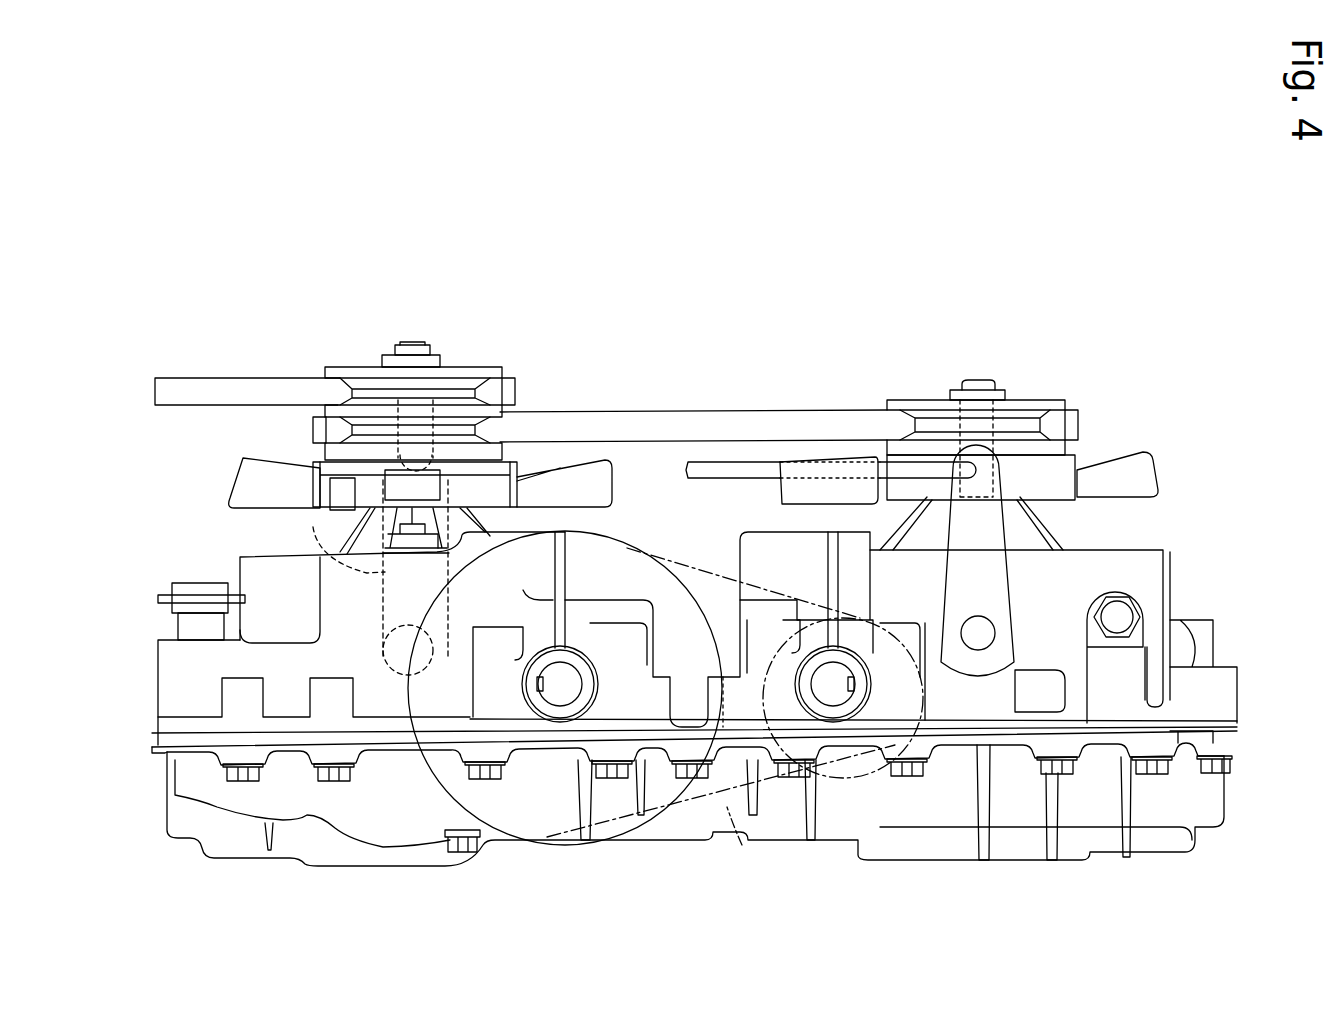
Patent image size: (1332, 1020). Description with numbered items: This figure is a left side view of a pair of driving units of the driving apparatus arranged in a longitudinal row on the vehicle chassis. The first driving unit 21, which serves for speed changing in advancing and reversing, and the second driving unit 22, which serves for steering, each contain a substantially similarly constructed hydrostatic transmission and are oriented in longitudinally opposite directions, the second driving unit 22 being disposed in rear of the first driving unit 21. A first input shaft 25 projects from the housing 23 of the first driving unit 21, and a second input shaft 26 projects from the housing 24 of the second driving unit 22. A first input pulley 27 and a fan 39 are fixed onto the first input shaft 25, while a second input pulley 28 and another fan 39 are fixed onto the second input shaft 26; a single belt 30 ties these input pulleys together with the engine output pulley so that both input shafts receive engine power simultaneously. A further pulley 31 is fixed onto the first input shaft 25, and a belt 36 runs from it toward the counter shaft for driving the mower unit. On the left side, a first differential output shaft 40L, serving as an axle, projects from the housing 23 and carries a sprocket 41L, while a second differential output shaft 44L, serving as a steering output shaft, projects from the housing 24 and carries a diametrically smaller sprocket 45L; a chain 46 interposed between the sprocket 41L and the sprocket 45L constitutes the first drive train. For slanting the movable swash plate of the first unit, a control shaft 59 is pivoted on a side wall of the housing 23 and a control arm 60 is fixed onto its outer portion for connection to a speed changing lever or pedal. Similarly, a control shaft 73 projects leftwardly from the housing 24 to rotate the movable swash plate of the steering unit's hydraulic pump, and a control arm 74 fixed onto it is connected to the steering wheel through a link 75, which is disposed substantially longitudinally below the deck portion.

The first driving unit 21 is at (186, 497).
The second driving unit 22 is at (1186, 497).
The housing 23 is at (243, 563).
The housing 24 is at (1154, 552).
The first input shaft 25 is at (412, 345).
The second input shaft 26 is at (975, 380).
The first input pulley 27 is at (325, 453).
The second input pulley 28 is at (1036, 400).
The belt 30 is at (730, 410).
The pulley 31 is at (347, 367).
The belt 36 is at (237, 378).
The fan 39 is at (242, 462).
The first differential output shaft 40L is at (562, 700).
The sprocket 41L is at (462, 850).
The second differential output shaft 44L is at (840, 697).
The sprocket 45L is at (754, 846).
The chain 46 is at (688, 800).
The control shaft 59 is at (378, 636).
The control arm 60 is at (326, 538).
The control shaft 73 is at (986, 631).
The control arm 74 is at (1012, 580).
The link 75 is at (688, 478).